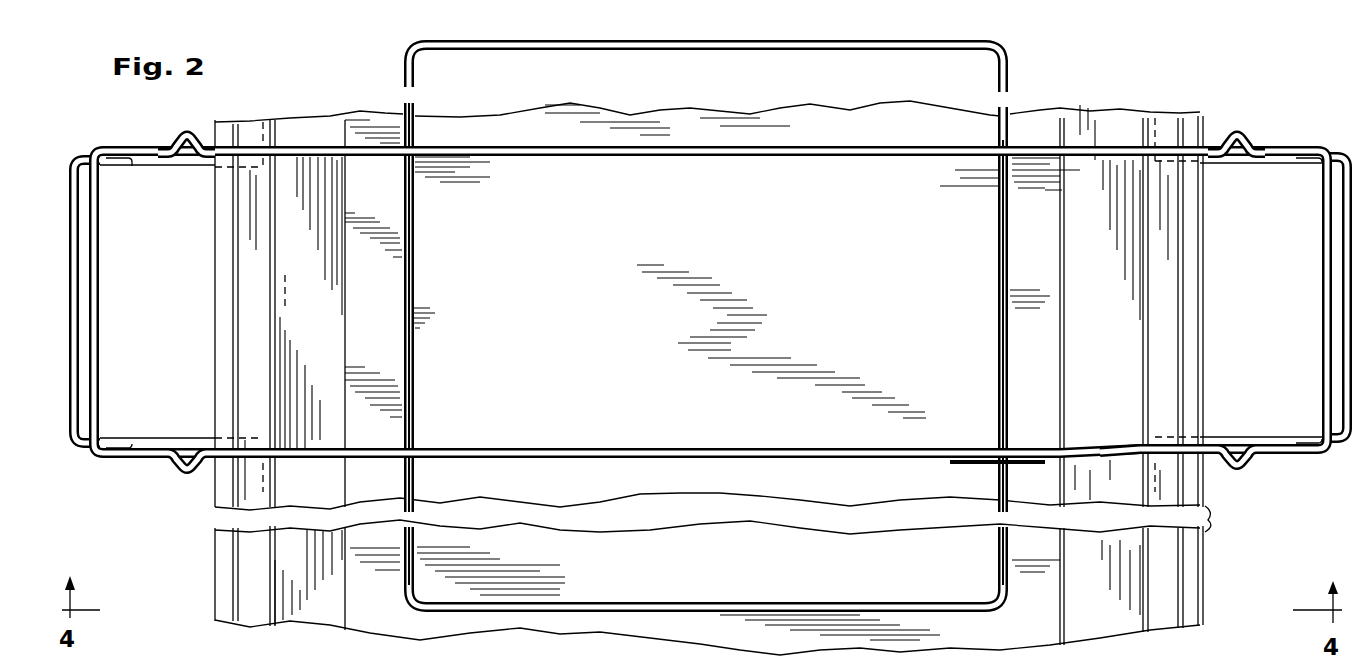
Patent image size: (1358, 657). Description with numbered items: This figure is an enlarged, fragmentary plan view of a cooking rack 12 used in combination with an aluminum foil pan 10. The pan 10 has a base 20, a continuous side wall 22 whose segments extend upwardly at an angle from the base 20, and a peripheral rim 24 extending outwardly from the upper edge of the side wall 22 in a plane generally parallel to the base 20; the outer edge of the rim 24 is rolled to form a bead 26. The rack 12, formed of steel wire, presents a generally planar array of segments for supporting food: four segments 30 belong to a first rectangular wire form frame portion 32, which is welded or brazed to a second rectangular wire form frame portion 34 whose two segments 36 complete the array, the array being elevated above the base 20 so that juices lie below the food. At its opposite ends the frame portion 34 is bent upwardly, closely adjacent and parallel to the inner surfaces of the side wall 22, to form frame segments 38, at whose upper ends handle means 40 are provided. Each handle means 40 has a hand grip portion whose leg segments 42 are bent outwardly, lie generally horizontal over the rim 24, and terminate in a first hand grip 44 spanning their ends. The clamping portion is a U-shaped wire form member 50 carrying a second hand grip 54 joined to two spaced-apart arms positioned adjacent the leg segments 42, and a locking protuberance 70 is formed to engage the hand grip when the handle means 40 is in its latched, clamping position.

The aluminum foil pan 10 is at (1167, 106).
The cooking rack 12 is at (1022, 56).
The base 20 is at (661, 325).
The continuous side wall 22 is at (293, 312).
The peripheral rim 24 is at (250, 278).
The bead 26 is at (222, 242).
The segments 30 is at (520, 48).
The first rectangular wire form frame portion 32 is at (990, 75).
The second rectangular wire form frame portion 34 is at (968, 137).
The segments 36 is at (620, 157).
The frame segments 38 is at (320, 165).
The handle means 40 is at (114, 188).
The leg segment 42 is at (162, 150).
The first hand grip 44 is at (92, 330).
The U-shaped wire form member 50 is at (82, 148).
The second hand grip 54 is at (72, 397).
The locking protuberance 70 is at (1303, 455).